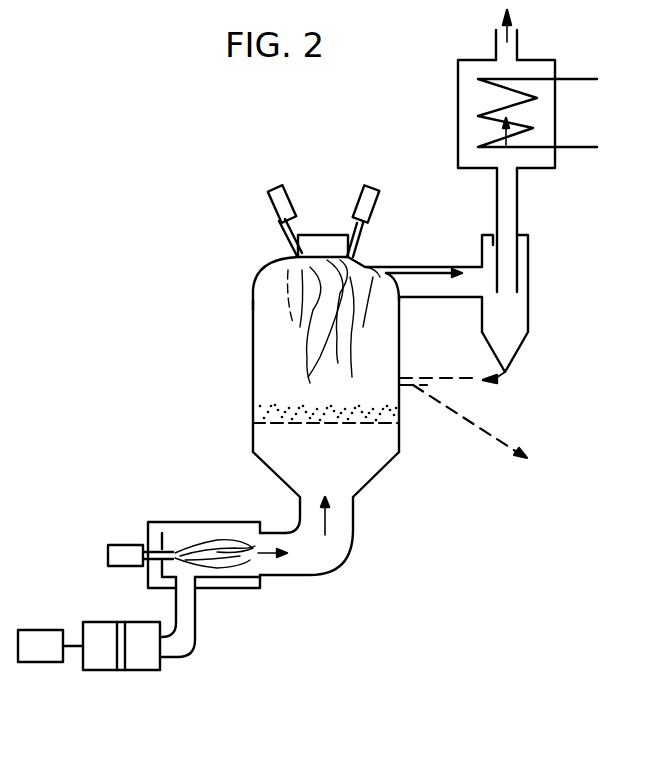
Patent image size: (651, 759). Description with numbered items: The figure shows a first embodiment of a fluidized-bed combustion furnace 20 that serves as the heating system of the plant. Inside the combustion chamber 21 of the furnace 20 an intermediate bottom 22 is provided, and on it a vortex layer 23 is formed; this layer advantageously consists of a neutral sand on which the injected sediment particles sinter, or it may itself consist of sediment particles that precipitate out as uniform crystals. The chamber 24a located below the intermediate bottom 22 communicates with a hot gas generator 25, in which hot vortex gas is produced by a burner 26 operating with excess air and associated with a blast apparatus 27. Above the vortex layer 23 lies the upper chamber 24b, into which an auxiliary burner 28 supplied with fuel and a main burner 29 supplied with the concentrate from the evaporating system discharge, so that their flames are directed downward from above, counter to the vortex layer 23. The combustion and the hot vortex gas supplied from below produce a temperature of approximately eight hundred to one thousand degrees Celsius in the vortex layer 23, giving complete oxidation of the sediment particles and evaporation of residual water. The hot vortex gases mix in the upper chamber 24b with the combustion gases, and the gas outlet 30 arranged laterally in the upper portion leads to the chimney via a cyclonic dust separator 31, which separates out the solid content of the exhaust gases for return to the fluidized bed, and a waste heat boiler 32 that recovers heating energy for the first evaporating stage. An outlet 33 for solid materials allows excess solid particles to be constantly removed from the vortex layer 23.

The furnace 20 is at (203, 263).
The combustion chamber 21 is at (254, 352).
The intermediate bottom 22 is at (312, 426).
The vortex layer 23 is at (258, 412).
The chamber 24a is at (362, 467).
The upper chamber 24b is at (263, 296).
The hot gas generator 25 is at (218, 600).
The burner 26 is at (118, 548).
The air blower 27 is at (140, 665).
The auxiliary burner 28 is at (271, 208).
The main burner 29 is at (376, 210).
The gas outlet 30 is at (440, 288).
The cyclonic dust separator 31 is at (518, 315).
The waste heat boiler 32 is at (552, 118).
The outlet for solid materials 33 is at (472, 418).